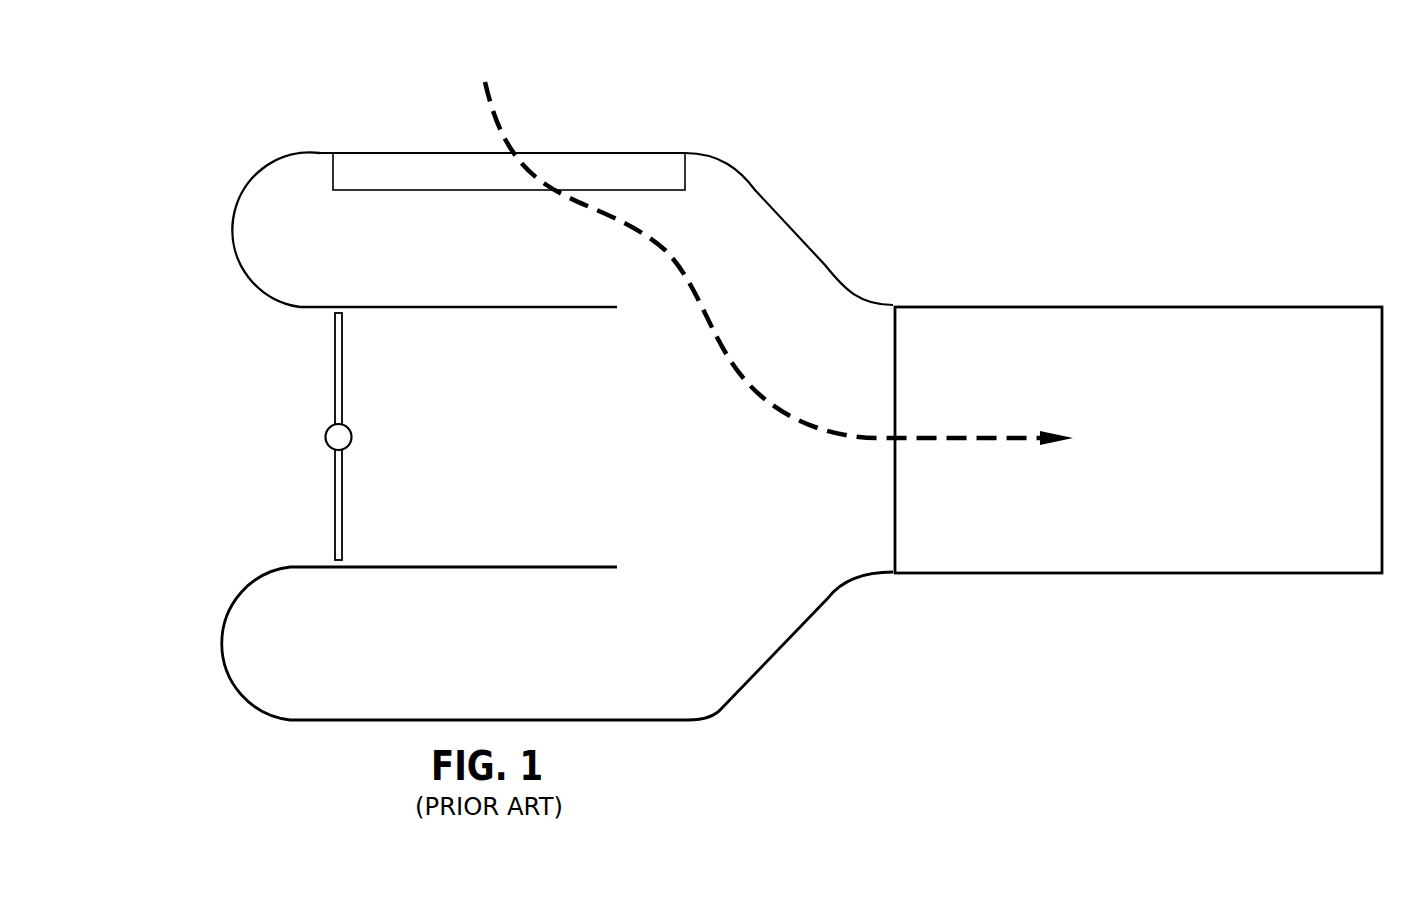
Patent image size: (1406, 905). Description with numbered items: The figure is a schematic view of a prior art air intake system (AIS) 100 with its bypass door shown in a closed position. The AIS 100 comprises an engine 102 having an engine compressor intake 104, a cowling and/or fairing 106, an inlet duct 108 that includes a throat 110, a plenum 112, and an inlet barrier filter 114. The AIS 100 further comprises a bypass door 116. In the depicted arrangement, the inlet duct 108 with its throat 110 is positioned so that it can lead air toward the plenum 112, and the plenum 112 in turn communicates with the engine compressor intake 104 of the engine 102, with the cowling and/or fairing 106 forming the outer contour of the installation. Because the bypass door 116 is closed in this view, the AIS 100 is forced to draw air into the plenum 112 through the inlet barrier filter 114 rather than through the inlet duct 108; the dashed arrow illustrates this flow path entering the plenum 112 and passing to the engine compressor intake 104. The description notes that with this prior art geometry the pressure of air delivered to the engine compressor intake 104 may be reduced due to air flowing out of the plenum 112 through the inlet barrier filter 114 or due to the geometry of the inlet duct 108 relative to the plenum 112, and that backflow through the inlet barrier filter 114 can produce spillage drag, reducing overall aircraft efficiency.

The air intake system 100 is at (979, 88).
The engine 102 is at (1197, 305).
The engine compressor intake 104 is at (898, 374).
The cowling and/or fairing 106 is at (789, 216).
The inlet duct 108 is at (224, 217).
The throat 110 is at (437, 522).
The plenum 112 is at (722, 220).
The inlet barrier filter 114 is at (632, 163).
The bypass door 116 is at (333, 498).